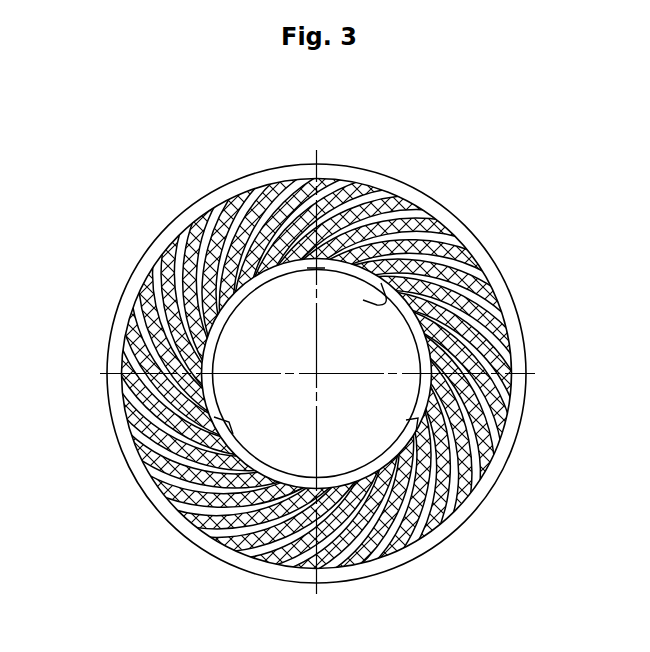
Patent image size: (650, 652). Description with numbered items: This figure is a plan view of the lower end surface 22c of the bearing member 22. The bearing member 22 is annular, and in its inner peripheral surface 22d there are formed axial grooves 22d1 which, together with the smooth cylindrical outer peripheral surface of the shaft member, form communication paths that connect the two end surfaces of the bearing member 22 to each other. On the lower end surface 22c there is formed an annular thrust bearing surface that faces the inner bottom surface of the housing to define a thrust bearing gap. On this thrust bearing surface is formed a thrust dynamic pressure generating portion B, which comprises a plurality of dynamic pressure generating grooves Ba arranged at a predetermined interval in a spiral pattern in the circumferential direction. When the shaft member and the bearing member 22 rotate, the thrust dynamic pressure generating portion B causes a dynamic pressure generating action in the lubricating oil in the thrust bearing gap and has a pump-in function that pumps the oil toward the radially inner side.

The bearing member 22 is at (112, 433).
The lower end surface 22c is at (241, 542).
The inner peripheral surface 22d is at (453, 237).
The axial grooves 22d1 is at (388, 470).
The thrust dynamic pressure generating portion B is at (507, 360).
The dynamic pressure generating grooves Ba is at (497, 422).